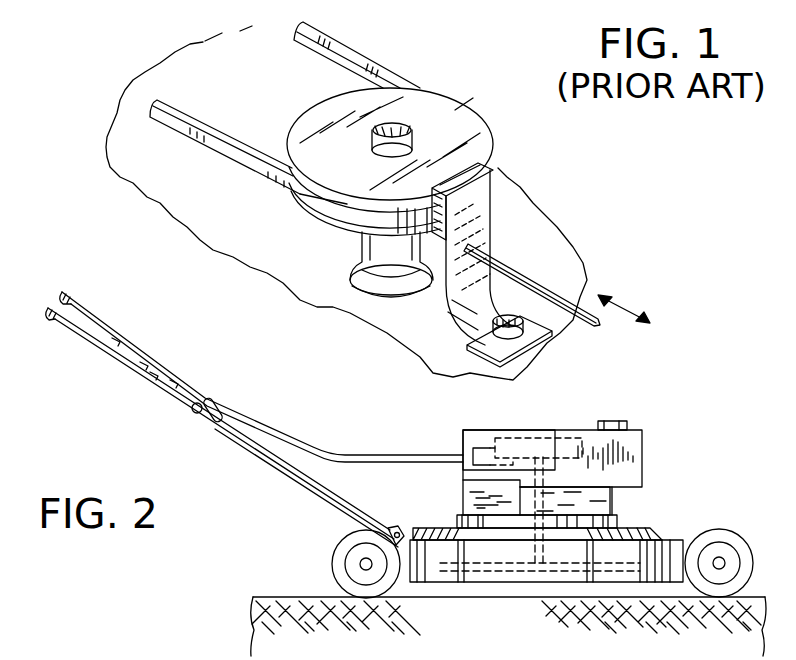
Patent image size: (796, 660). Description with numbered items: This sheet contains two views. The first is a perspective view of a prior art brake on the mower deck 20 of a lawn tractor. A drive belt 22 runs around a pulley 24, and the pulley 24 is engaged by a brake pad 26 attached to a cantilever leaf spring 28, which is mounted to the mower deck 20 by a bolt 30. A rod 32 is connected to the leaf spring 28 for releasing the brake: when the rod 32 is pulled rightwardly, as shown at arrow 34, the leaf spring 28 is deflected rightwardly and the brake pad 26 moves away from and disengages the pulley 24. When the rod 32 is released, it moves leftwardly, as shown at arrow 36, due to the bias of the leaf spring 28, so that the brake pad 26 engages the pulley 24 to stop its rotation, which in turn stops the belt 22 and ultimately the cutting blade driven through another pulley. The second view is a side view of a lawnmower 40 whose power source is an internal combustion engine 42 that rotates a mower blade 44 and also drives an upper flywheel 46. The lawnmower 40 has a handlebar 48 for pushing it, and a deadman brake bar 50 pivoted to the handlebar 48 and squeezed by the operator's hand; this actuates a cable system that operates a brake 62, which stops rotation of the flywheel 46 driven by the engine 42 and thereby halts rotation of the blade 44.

In FIG. 1, the mower deck 20 is at (535, 202).
In FIG. 1, the drive belt 22 is at (378, 72).
In FIG. 1, the pulley 24 is at (457, 113).
In FIG. 1, the brake pad 26 is at (492, 168).
In FIG. 1, the cantilever leaf spring 28 is at (492, 233).
In FIG. 1, the bolt 30 is at (476, 350).
In FIG. 1, the rod 32 is at (512, 266).
In FIG. 1, the arrow 34 is at (654, 322).
In FIG. 1, the arrow 36 is at (606, 289).
In FIG. 2, the lawnmower 40 is at (652, 507).
In FIG. 2, the internal combustion engine 42 is at (607, 502).
In FIG. 2, the mower blade 44 is at (503, 570).
In FIG. 2, the upper flywheel 46 is at (528, 440).
In FIG. 2, the handlebar 48 is at (60, 323).
In FIG. 2, the deadman brake bar 50 is at (76, 307).
In FIG. 2, the brake 62 is at (483, 450).